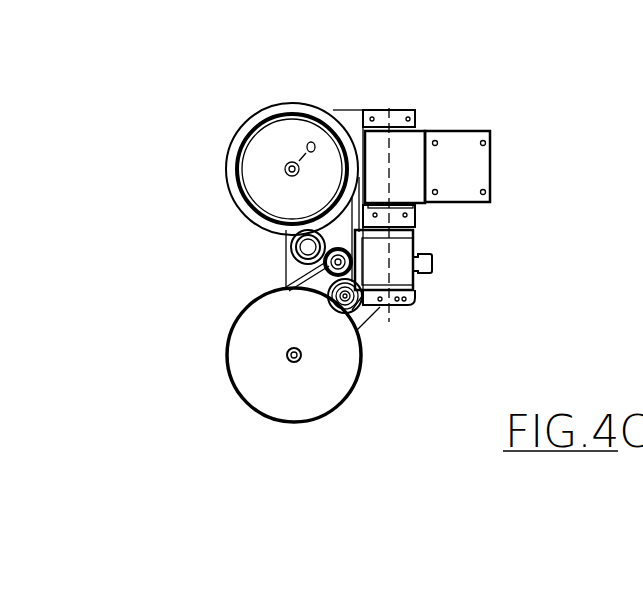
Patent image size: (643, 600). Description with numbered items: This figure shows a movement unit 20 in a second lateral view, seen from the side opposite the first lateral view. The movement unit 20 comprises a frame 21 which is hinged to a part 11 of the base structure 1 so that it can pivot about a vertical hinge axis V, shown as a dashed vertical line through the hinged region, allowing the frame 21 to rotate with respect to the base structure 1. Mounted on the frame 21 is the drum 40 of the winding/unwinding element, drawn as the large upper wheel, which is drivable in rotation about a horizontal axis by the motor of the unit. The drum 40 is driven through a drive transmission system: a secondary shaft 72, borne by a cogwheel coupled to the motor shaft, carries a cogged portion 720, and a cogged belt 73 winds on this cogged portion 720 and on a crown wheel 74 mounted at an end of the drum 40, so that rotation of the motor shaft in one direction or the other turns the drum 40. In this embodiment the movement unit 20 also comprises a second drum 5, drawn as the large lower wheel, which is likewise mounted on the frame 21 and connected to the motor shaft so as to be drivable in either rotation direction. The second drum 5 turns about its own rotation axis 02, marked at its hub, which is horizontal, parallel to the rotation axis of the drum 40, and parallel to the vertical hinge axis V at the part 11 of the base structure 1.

The base structure 1 is at (480, 137).
The part of the base structure 11 is at (410, 140).
The movement unit 20 is at (195, 212).
The frame 21 is at (350, 108).
The drum 40 is at (273, 104).
The crown wheel 74 is at (262, 133).
The vertical hinge axis V is at (398, 104).
The cogged belt 73 is at (412, 228).
The cogged portion 720 is at (404, 306).
The secondary shaft 72 is at (352, 316).
The second drum 5 is at (312, 392).
The rotation axis of the second drum 02 is at (289, 352).